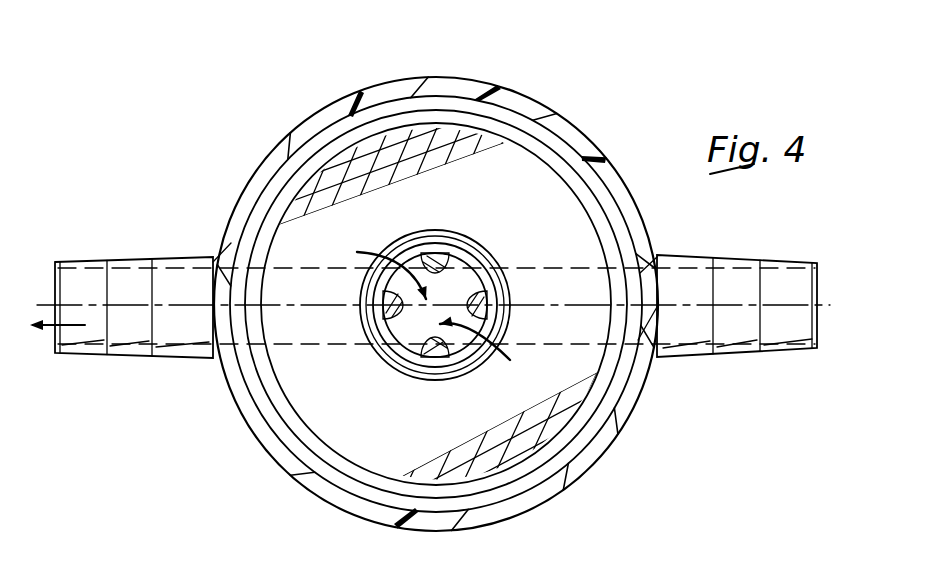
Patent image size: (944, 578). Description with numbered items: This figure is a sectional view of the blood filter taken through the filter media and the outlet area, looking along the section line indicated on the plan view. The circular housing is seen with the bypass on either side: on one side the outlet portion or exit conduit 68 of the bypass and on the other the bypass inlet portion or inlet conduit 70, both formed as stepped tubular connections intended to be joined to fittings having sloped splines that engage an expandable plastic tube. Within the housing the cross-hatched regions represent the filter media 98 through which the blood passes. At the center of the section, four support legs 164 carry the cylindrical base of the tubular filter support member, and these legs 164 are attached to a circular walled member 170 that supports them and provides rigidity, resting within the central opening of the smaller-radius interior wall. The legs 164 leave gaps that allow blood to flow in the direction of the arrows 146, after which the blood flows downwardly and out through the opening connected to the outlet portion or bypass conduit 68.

The outlet portion or exit conduit 68 is at (175, 369).
The bypass inlet portion or inlet conduit 70 is at (738, 363).
The filter media 98 is at (433, 165).
The arrow 146 is at (358, 256).
The support legs 164 is at (451, 254).
The circular walled member 170 is at (412, 349).